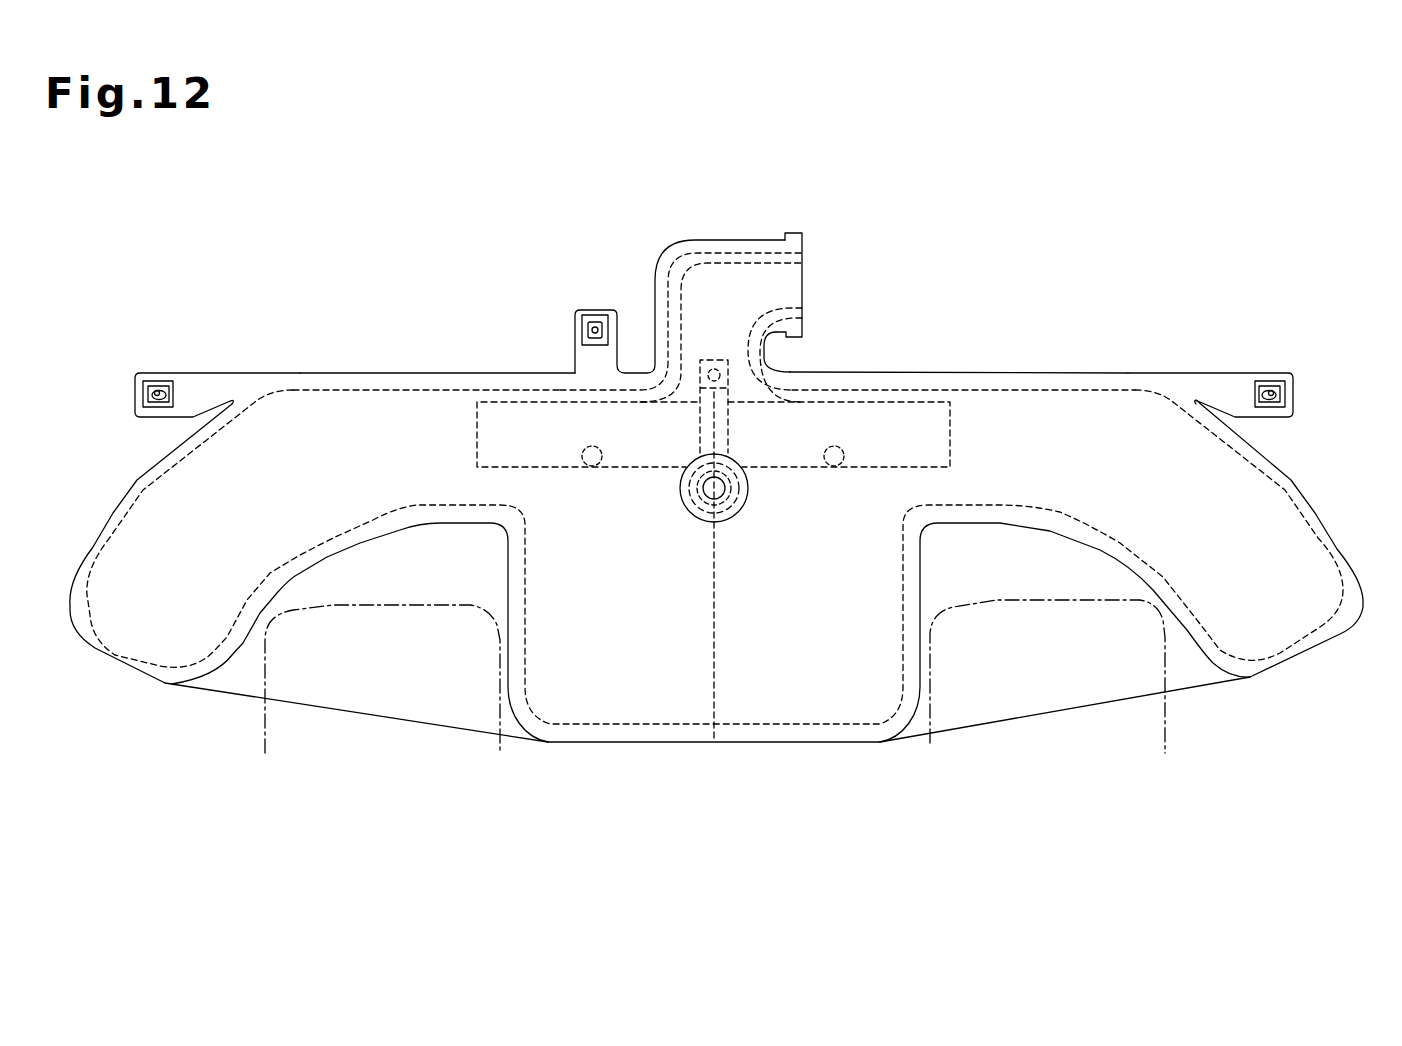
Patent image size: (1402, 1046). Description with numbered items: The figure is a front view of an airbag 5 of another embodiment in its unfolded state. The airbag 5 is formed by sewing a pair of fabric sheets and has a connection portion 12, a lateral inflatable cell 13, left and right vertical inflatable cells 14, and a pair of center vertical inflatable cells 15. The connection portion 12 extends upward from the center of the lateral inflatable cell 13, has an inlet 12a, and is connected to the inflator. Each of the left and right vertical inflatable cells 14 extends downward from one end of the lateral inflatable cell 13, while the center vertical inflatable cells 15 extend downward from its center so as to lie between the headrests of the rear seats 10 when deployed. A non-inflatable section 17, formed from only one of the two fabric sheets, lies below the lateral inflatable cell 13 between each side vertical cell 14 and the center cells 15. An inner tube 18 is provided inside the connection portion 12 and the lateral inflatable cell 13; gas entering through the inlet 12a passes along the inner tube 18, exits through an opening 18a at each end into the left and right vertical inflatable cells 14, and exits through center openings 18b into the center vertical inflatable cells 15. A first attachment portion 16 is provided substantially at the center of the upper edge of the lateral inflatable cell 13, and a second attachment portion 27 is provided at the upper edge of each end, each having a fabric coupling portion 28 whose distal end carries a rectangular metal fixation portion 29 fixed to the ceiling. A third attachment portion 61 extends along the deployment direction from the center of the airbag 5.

The airbag 5 is at (961, 319).
The rear seat 10 is at (335, 605).
The connection portion 12 is at (732, 241).
The inlet 12a is at (803, 278).
The lateral inflatable cell 13 is at (436, 403).
The left and right vertical inflatable cells 14 is at (170, 496).
The center vertical inflatable cells 15 is at (612, 710).
The first attachment portion 16 is at (577, 357).
The non-inflatable section 17 is at (360, 703).
The inner tube 18 is at (664, 370).
The opening 18a is at (475, 435).
The openings 18b is at (593, 445).
The second attachment portion 27 is at (228, 347).
The coupling portion 28 is at (192, 389).
The fixation portion 29 is at (157, 385).
The third attachment portion 61 is at (730, 417).